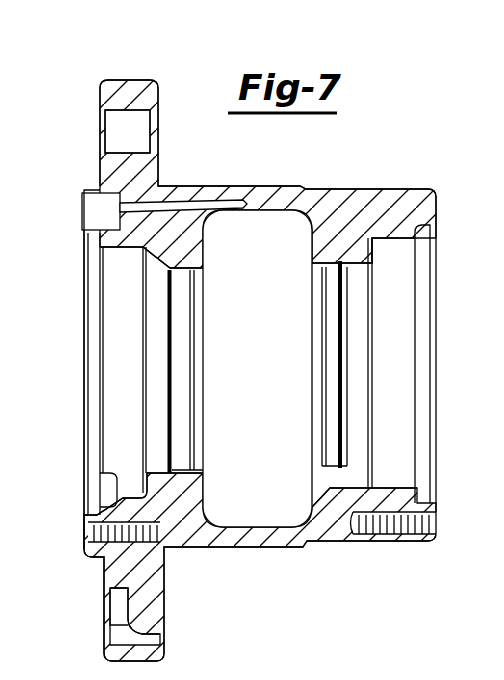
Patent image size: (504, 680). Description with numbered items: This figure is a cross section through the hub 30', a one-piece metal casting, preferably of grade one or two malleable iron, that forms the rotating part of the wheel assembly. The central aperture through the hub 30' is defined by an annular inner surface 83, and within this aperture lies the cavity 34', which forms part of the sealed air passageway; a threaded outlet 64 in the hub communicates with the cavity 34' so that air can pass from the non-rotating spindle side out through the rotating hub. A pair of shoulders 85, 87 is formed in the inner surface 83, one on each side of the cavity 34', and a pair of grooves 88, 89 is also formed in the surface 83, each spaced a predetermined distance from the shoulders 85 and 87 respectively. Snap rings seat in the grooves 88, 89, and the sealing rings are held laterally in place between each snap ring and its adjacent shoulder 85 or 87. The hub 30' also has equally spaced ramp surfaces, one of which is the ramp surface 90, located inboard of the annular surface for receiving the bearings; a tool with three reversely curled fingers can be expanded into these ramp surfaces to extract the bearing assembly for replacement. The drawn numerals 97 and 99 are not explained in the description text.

The hub 30' is at (260, 370).
The cavity 34' is at (276, 333).
The outlet 64 is at (80, 207).
The retaining plate 97 is at (143, 245).
The groove 88 is at (145, 290).
The ramp surface 90 is at (170, 268).
The shoulder 85 is at (180, 291).
The shoulder 87 is at (333, 273).
The groove 89 is at (346, 273).
The end ring 99 is at (437, 194).
The annular inner surface 83 is at (82, 478).